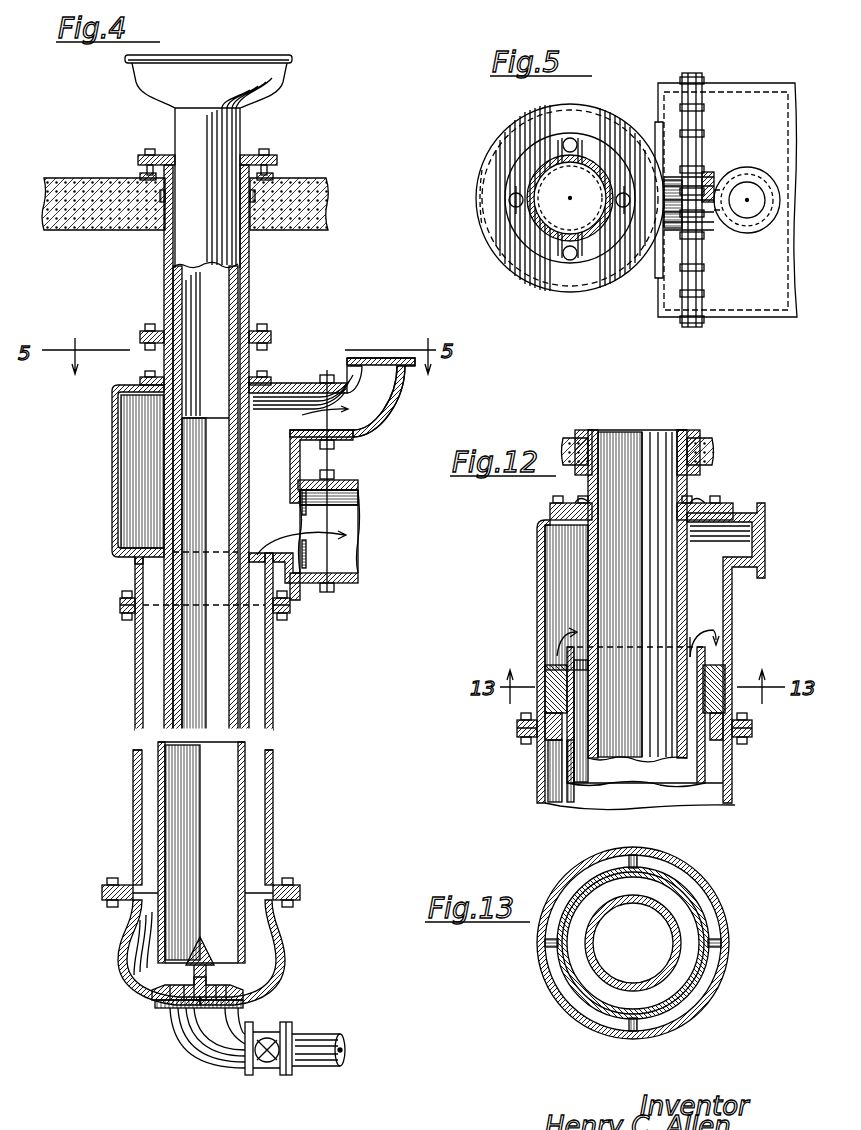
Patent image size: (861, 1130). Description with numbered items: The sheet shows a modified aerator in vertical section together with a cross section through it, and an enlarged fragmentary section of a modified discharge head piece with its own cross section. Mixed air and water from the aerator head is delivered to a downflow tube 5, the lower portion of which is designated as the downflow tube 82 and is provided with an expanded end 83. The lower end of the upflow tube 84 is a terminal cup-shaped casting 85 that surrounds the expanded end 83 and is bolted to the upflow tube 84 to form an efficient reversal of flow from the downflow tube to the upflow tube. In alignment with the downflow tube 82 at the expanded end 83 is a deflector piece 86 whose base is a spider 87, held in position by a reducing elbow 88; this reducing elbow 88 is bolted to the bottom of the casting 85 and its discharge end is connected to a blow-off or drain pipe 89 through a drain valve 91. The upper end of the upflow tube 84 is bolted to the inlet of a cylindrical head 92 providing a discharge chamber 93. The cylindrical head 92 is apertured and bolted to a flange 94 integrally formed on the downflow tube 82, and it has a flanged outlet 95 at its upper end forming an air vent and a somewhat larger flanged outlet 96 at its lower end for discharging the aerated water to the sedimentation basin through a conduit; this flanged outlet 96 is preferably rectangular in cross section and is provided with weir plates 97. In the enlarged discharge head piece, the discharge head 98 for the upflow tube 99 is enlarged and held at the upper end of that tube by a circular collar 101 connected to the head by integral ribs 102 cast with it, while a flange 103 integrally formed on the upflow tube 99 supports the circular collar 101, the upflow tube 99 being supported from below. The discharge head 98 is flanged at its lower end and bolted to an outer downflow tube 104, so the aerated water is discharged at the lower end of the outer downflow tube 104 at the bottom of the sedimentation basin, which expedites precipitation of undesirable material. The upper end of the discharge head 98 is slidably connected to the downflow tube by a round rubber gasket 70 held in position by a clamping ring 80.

In FIG. 4, the downflow tube 5 is at (228, 254).
In FIG. 12, the round rubber gasket 70 is at (588, 492).
In FIG. 12, the clamping ring 80 is at (550, 511).
In FIG. 4, the downflow tube 82 is at (164, 652).
In FIG. 5, the downflow tube 82 is at (536, 226).
In FIG. 4, the expanded end 83 is at (122, 955).
In FIG. 4, the upflow tube 84 is at (273, 804).
In FIG. 4, the terminal cup-shaped casting 85 is at (283, 957).
In FIG. 4, the deflector piece 86 is at (152, 990).
In FIG. 4, the spider 87 is at (163, 1008).
In FIG. 4, the reducing elbow 88 is at (196, 1022).
In FIG. 4, the blow-off or drain pipe 89 is at (318, 1068).
In FIG. 4, the drain valve 91 is at (268, 1064).
In FIG. 4, the cylindrical head 92 is at (112, 474).
In FIG. 5, the cylindrical head 92 is at (554, 278).
In FIG. 4, the discharge chamber 93 is at (138, 500).
In FIG. 4, the flange 94 is at (141, 378).
In FIG. 5, the flange 94 is at (540, 243).
In FIG. 4, the flanged outlet 95 is at (311, 386).
In FIG. 4, the flanged outlet 96 is at (305, 583).
In FIG. 5, the flanged outlet 96 is at (674, 312).
In FIG. 4, the weir plates 97 is at (304, 507).
In FIG. 5, the weir plates 97 is at (663, 268).
In FIG. 12, the discharge head 98 is at (543, 608).
In FIG. 13, the discharge head 98 is at (703, 1010).
In FIG. 12, the upflow tube 99 is at (566, 765).
In FIG. 13, the upflow tube 99 is at (607, 1003).
In FIG. 12, the circular collar 101 is at (545, 698).
In FIG. 13, the circular collar 101 is at (703, 980).
In FIG. 12, the integral ribs 102 is at (548, 682).
In FIG. 13, the integral ribs 102 is at (718, 928).
In FIG. 12, the flange 103 is at (560, 720).
In FIG. 12, the outer downflow tube 104 is at (733, 780).